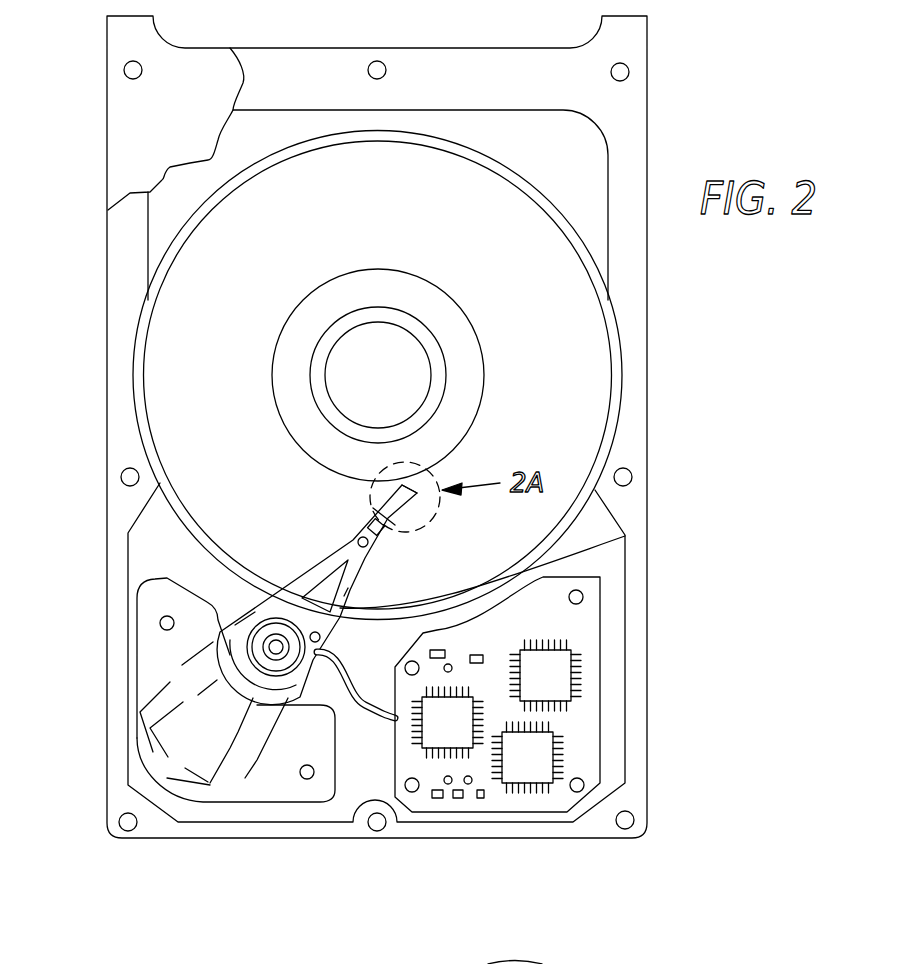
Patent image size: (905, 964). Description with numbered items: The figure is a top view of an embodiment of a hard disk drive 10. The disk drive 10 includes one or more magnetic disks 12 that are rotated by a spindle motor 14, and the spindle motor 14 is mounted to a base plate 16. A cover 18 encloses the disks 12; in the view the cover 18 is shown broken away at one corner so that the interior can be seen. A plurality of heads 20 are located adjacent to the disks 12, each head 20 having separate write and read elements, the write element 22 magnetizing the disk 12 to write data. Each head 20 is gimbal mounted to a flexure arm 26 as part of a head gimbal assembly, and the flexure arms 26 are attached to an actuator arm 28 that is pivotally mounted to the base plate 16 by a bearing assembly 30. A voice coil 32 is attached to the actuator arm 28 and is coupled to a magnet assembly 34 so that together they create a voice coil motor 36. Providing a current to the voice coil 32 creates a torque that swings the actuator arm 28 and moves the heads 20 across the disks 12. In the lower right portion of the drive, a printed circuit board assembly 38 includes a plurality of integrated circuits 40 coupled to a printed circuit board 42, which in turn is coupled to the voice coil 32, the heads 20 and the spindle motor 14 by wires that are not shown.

The hard disk drive 10 is at (655, 358).
The magnetic disk 12 is at (377, 375).
The spindle motor 14 is at (380, 370).
The base plate 16 is at (588, 198).
The cover 18 is at (120, 120).
The head 20 is at (412, 484).
The write element 22 is at (469, 957).
The flexure arm 26 is at (390, 512).
The actuator arm 28 is at (283, 603).
The bearing assembly 30 is at (262, 660).
The voice coil 32 is at (102, 727).
The magnet assembly 34 is at (283, 792).
The voice coil motor 36 is at (208, 790).
The printed circuit board assembly 38 is at (598, 720).
The integrated circuit 40 is at (520, 760).
The printed circuit board 42 is at (582, 627).